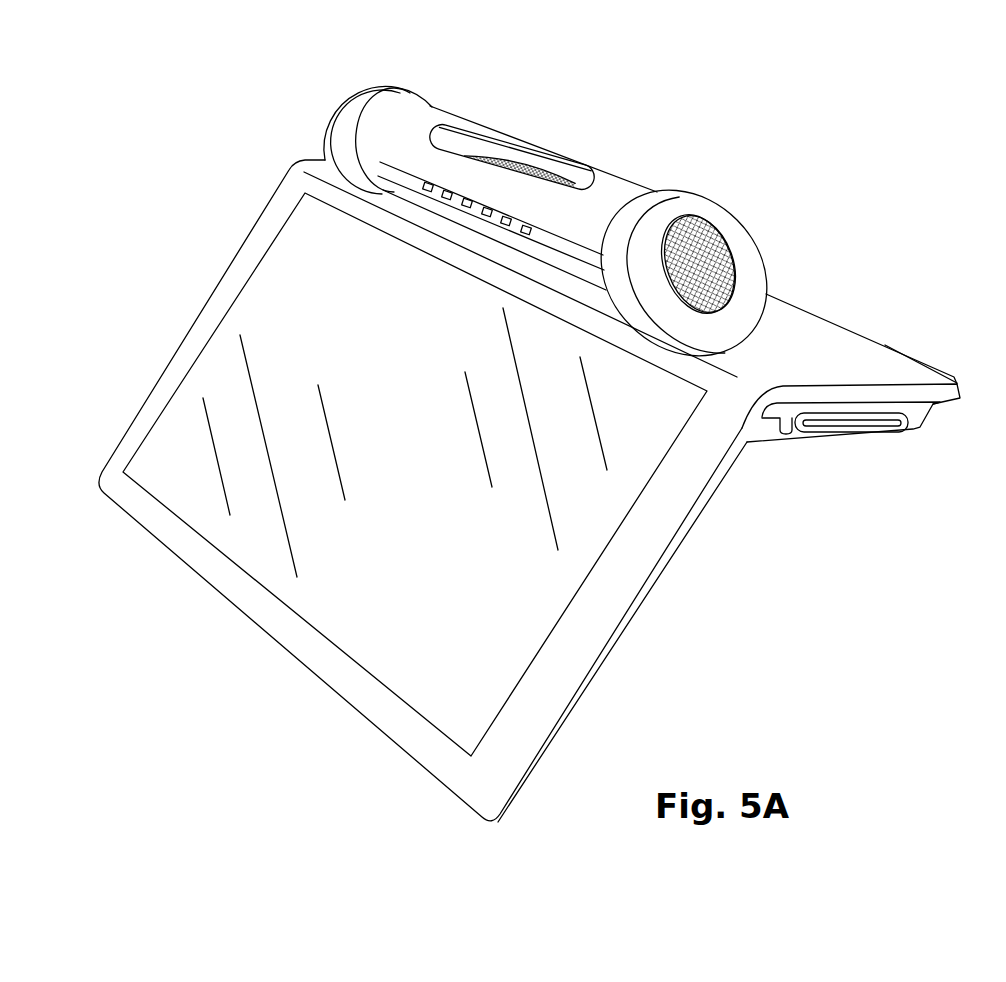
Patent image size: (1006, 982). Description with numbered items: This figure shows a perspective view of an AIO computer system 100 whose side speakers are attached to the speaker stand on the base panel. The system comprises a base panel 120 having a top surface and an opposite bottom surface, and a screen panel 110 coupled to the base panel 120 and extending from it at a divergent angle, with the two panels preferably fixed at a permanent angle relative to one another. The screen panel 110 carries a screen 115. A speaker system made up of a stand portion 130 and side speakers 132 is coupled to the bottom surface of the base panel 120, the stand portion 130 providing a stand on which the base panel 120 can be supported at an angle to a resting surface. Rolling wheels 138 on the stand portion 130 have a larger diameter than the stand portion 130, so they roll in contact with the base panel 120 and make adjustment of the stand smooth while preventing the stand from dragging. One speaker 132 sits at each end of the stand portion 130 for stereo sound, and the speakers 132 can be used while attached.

The AIO computer system 100 is at (86, 132).
The screen panel 110 is at (240, 587).
The screen 115 is at (228, 385).
The base panel 120 is at (860, 349).
The stand portion 130 is at (615, 185).
The side speakers 132 is at (352, 112).
The rolling wheels 138 is at (398, 98).